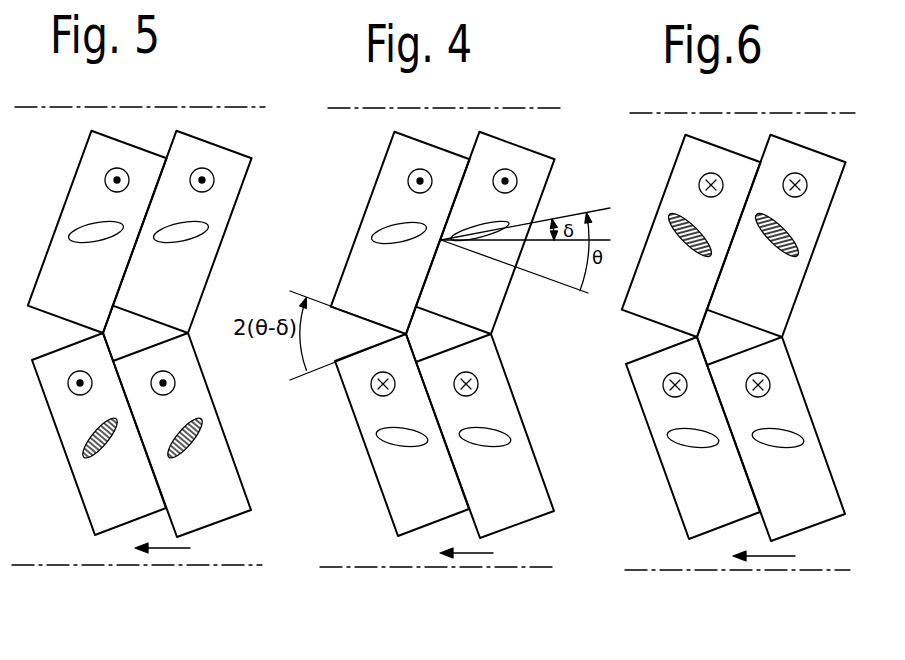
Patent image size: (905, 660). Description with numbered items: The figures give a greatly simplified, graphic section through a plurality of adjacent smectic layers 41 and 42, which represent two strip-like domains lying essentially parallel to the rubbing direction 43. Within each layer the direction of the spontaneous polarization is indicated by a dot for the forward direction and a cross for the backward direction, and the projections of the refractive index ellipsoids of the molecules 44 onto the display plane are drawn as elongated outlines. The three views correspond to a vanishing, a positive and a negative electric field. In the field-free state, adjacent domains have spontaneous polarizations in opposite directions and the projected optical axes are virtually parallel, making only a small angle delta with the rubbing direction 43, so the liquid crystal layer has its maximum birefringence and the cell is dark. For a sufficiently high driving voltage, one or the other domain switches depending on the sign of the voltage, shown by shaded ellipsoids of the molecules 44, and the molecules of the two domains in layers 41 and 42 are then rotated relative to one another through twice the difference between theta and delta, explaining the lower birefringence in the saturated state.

In FIG. 5, the smectic layer 41 is at (144, 148).
In FIG. 4, the smectic layer 41 is at (443, 217).
In FIG. 6, the smectic layer 41 is at (734, 221).
In FIG. 5, the smectic layer 42 is at (165, 515).
In FIG. 4, the smectic layer 42 is at (444, 451).
In FIG. 6, the smectic layer 42 is at (735, 453).
In FIG. 5, the rubbing direction 43 is at (163, 549).
In FIG. 4, the rubbing direction 43 is at (467, 577).
In FIG. 6, the rubbing direction 43 is at (764, 580).
In FIG. 4, the molecules 44 is at (439, 315).